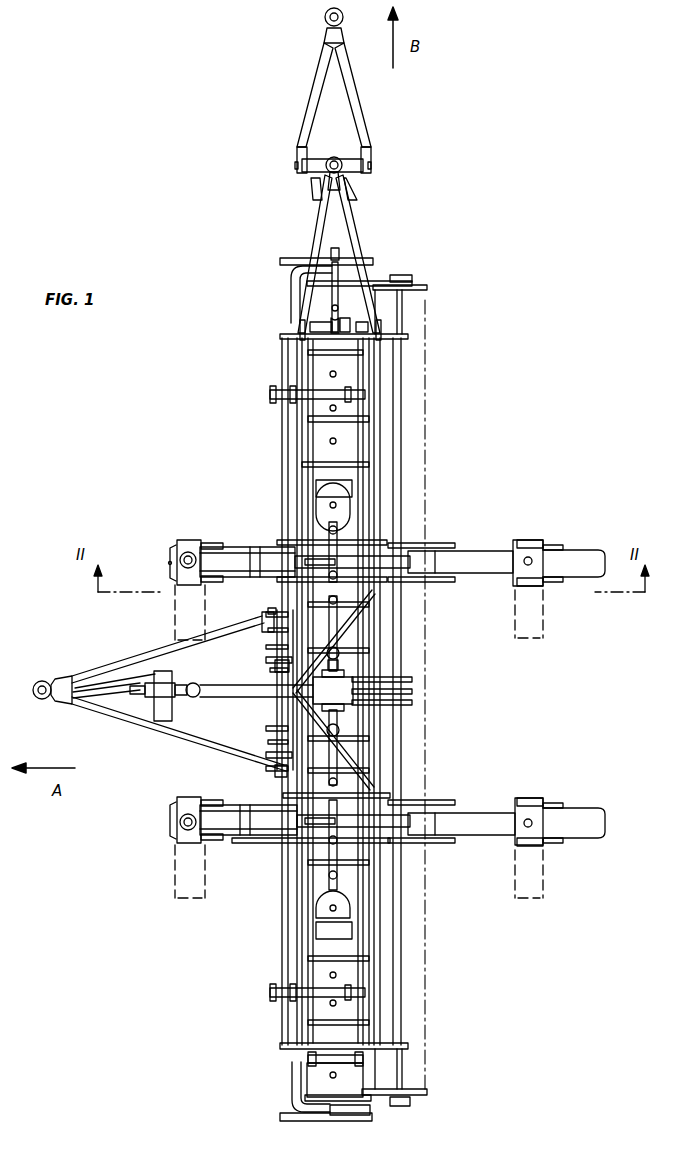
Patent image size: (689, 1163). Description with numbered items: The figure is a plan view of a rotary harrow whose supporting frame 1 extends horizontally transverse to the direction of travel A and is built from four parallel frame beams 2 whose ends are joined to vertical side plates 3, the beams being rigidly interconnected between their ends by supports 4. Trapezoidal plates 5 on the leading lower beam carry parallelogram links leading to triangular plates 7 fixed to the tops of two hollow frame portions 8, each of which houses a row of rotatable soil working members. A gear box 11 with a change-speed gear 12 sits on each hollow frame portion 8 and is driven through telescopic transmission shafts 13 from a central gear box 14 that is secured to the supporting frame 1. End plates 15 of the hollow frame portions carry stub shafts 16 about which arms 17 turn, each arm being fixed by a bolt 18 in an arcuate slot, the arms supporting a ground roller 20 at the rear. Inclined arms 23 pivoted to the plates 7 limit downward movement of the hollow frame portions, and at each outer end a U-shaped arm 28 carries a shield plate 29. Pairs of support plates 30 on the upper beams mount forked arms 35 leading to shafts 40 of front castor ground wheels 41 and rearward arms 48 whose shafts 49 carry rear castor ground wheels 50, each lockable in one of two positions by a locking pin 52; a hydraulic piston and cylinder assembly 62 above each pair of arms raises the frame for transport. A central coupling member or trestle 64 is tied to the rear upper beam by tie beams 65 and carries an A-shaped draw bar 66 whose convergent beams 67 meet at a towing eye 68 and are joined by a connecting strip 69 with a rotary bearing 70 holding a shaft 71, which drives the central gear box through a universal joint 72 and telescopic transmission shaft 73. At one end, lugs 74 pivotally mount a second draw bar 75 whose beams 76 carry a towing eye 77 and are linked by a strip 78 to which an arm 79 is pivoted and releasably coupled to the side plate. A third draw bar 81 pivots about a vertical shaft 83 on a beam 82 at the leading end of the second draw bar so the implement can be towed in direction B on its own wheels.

The supporting frame 1 is at (283, 452).
The frame beams 2 is at (299, 468).
The side plate 3 is at (408, 337).
The supports 4 is at (385, 421).
The plates 5 is at (270, 395).
The plates 7 is at (334, 375).
The hollow frame portion 8 is at (315, 365).
The gear box 11 is at (318, 503).
The change-speed gear 12 is at (338, 481).
The telescopic transmission shafts 13 is at (340, 622).
The central gear box 14 is at (350, 685).
The end plates 15 is at (335, 1074).
The stub shaft 16 is at (312, 1116).
The arm 17 is at (426, 288).
The bolt 18 is at (392, 279).
The ground roller 20 is at (427, 468).
The arm 23 is at (360, 992).
The arm 28 is at (291, 295).
The shield plate 29 is at (280, 262).
The support plates 30 is at (284, 541).
The arms 35 is at (257, 541).
The shaft 40 is at (189, 549).
The castor ground wheel 41 is at (178, 554).
The arms 48 is at (494, 548).
The shaft 49 is at (520, 566).
The castor ground wheel 50 is at (590, 548).
The locking pin 52 is at (520, 545).
The double-acting hydraulic piston and cylinder assembly 62 is at (292, 572).
The coupling member or trestle 64 is at (278, 672).
The tie beams 65 is at (350, 760).
The draw bar 66 is at (98, 668).
The beams 67 is at (128, 676).
The towing eye 68 is at (43, 680).
The connecting strip 69 is at (172, 656).
The rotary bearing 70 is at (150, 700).
The shaft 71 is at (94, 706).
The universal joint 72 is at (196, 683).
The telescopic transmission shaft 73 is at (209, 698).
The lugs 74 is at (300, 328).
The second draw bar 75 is at (356, 228).
The beams 76 is at (336, 226).
The towing eye 77 is at (337, 157).
The strip 78 is at (336, 252).
The arm 79 is at (346, 267).
The third draw bar 81 is at (318, 70).
The beam 82 is at (302, 170).
The shaft 83 is at (344, 162).